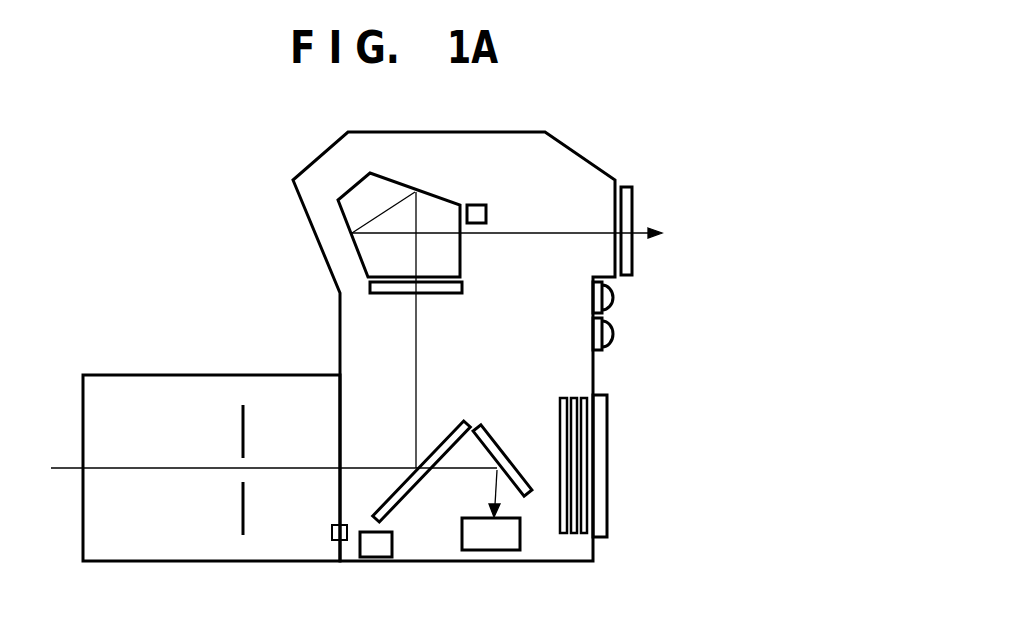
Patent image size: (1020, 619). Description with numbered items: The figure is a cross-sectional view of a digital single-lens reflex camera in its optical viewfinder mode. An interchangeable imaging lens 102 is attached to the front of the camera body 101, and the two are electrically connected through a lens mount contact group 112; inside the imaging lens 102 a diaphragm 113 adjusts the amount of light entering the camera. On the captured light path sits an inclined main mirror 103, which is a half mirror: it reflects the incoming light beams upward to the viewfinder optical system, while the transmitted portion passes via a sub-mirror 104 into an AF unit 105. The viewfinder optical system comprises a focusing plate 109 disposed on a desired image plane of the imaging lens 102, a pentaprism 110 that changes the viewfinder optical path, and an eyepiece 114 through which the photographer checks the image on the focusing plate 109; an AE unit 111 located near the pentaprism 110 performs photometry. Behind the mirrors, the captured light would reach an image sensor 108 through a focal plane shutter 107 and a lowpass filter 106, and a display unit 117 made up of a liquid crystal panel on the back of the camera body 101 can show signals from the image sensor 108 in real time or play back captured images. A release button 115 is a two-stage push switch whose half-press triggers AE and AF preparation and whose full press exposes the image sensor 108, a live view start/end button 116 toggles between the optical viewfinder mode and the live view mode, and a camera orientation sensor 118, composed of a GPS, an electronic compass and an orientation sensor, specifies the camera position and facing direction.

The camera body 101 is at (508, 131).
The imaging lens 102 is at (148, 374).
The main mirror 103 is at (397, 507).
The sub-mirror 104 is at (487, 424).
The AF unit 105 is at (493, 552).
The lowpass filter 106 is at (574, 535).
The focal plane shutter 107 is at (563, 535).
The image sensor 108 is at (584, 535).
The focusing plate 109 is at (445, 295).
The pentaprism 110 is at (410, 166).
The AE unit 111 is at (479, 204).
The lens mount contact group 112 is at (331, 533).
The diaphragm 113 is at (240, 427).
The eyepiece 114 is at (628, 186).
The release button 115 is at (614, 298).
The live view start/end button 116 is at (614, 336).
The display unit 117 is at (608, 483).
The camera orientation sensor 118 is at (380, 559).